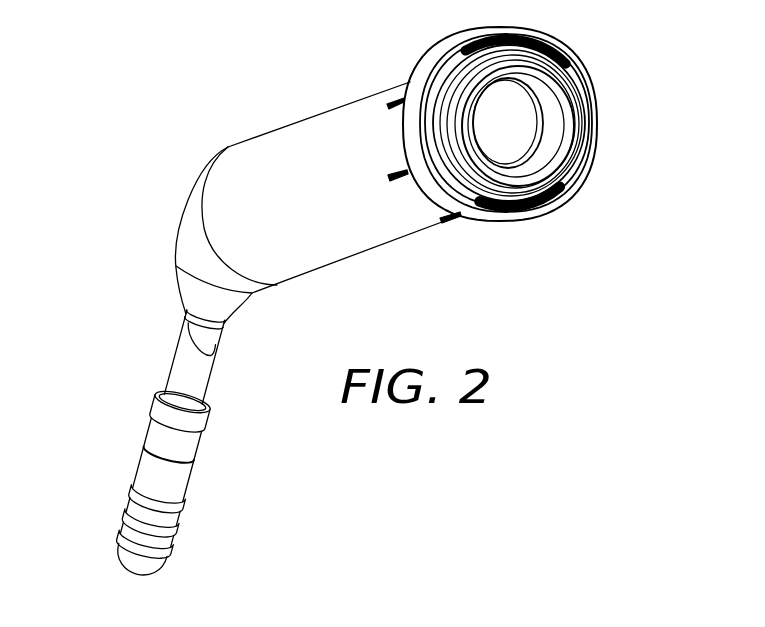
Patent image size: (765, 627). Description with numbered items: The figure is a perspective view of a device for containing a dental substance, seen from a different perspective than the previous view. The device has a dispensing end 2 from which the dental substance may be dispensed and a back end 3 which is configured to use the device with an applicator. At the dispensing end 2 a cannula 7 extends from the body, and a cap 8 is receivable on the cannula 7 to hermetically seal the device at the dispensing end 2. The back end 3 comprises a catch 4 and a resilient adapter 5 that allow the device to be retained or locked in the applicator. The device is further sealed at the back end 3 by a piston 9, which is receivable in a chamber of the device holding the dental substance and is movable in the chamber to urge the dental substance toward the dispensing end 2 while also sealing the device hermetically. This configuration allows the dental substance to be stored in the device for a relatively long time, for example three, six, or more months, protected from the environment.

The dispensing end 2 is at (92, 533).
The back end 3 is at (553, 216).
The catch 4 is at (423, 66).
The resilient adapter 5 is at (568, 52).
The cannula 7 is at (187, 362).
The cap 8 is at (147, 468).
The piston 9 is at (533, 129).